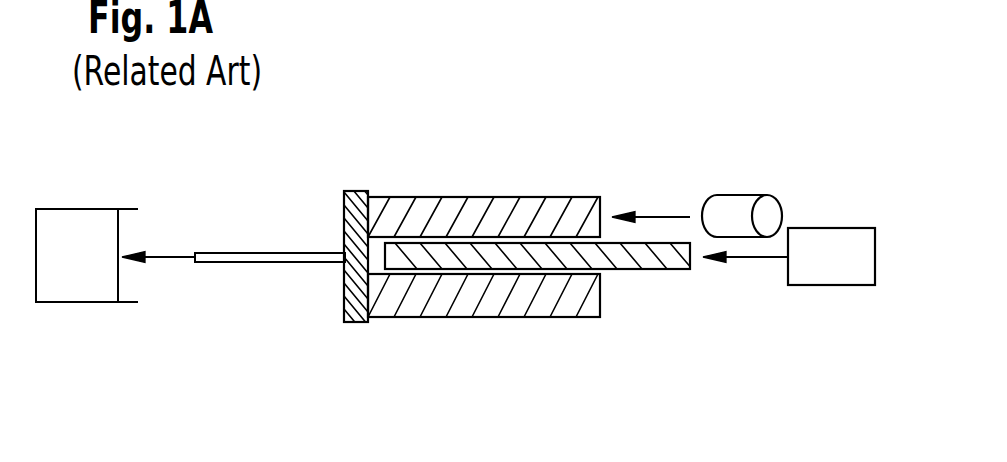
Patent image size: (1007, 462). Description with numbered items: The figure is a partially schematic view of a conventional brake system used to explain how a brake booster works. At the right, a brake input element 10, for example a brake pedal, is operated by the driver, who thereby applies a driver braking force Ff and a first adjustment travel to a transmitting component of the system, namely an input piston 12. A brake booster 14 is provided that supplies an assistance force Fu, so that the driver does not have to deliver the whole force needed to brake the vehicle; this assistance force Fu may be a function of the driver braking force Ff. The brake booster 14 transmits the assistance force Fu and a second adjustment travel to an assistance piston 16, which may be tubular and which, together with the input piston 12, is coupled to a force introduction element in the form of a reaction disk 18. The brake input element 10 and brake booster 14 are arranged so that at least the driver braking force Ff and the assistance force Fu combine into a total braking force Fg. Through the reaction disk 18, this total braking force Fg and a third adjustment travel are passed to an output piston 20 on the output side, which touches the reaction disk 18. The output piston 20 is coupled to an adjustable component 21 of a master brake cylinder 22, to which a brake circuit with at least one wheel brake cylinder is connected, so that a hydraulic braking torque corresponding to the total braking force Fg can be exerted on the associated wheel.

The brake input element 10 is at (837, 285).
The input piston 12 is at (678, 269).
The brake booster 14 is at (737, 205).
The assistance piston 16 is at (565, 210).
The reaction disk 18 is at (353, 322).
The output piston 20 is at (265, 262).
The adjustable component 21 is at (118, 278).
The master brake cylinder 22 is at (77, 302).
The assistance force Fu is at (663, 217).
The driver braking force Ff is at (750, 257).
The total braking force Fg is at (168, 257).